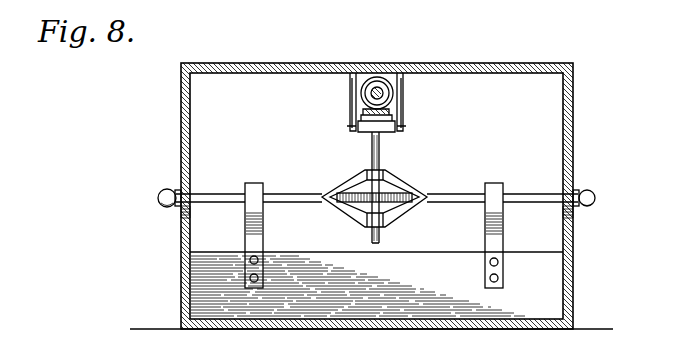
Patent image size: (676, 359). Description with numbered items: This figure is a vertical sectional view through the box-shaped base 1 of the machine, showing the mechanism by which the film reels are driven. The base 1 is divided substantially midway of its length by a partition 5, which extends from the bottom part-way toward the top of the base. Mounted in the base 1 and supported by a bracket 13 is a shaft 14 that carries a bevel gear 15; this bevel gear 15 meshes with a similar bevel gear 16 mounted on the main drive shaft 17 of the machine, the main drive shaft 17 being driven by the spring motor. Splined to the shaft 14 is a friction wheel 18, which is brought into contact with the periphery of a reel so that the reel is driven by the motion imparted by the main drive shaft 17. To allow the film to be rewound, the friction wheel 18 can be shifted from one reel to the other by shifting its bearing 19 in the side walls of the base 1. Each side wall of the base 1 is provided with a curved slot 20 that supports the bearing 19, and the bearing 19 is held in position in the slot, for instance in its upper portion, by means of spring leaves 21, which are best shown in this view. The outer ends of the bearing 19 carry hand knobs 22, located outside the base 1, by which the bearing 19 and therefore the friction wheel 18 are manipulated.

The base 1 is at (575, 129).
The partition 5 is at (508, 302).
The bracket 13 is at (404, 100).
The shaft 14 is at (371, 148).
The bevel gear 15 is at (358, 118).
The bevel gear 16 is at (364, 93).
The main drive shaft 17 is at (380, 88).
The friction wheel 18 is at (389, 194).
The bearing 19 is at (291, 193).
The curved slot 20 is at (181, 217).
The spring leaves 21 is at (265, 210).
The hand knobs 22 is at (157, 201).